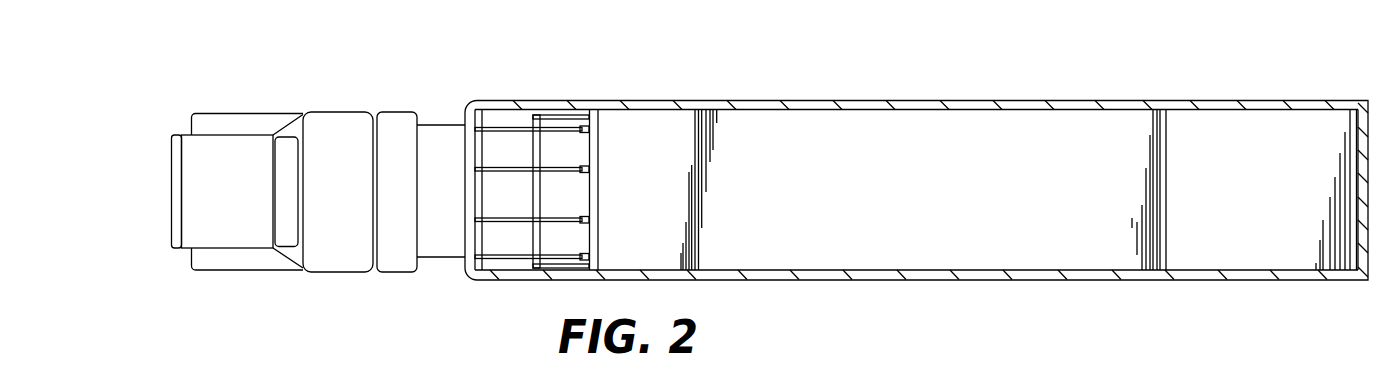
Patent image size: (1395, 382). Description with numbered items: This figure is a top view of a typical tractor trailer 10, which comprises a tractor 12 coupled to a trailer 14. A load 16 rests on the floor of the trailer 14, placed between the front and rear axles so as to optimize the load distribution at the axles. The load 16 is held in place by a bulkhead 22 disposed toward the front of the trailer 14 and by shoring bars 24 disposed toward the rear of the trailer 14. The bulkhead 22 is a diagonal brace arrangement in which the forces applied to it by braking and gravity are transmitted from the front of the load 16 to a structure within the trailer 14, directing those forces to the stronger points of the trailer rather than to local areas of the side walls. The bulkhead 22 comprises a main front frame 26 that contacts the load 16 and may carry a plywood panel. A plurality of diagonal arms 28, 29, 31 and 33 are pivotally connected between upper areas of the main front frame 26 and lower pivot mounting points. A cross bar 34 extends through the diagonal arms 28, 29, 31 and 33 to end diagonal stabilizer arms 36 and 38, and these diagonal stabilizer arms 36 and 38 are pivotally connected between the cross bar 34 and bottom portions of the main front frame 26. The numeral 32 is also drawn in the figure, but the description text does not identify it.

The tractor trailer 10 is at (724, 78).
The tractor 12 is at (343, 122).
The trailer 14 is at (820, 101).
The load 16 is at (963, 123).
The bulkhead 22 is at (495, 281).
The shoring bars 24 is at (1168, 203).
The main front frame 26 is at (607, 225).
The diagonal arm 28 is at (525, 258).
The diagonal arm 29 is at (523, 222).
The diagonal arm 31 is at (526, 170).
The end plate 32 is at (480, 256).
The diagonal arm 33 is at (525, 127).
The cross bar 34 is at (540, 194).
The diagonal stabilizer arm 36 is at (571, 272).
The diagonal stabilizer arm 38 is at (555, 116).